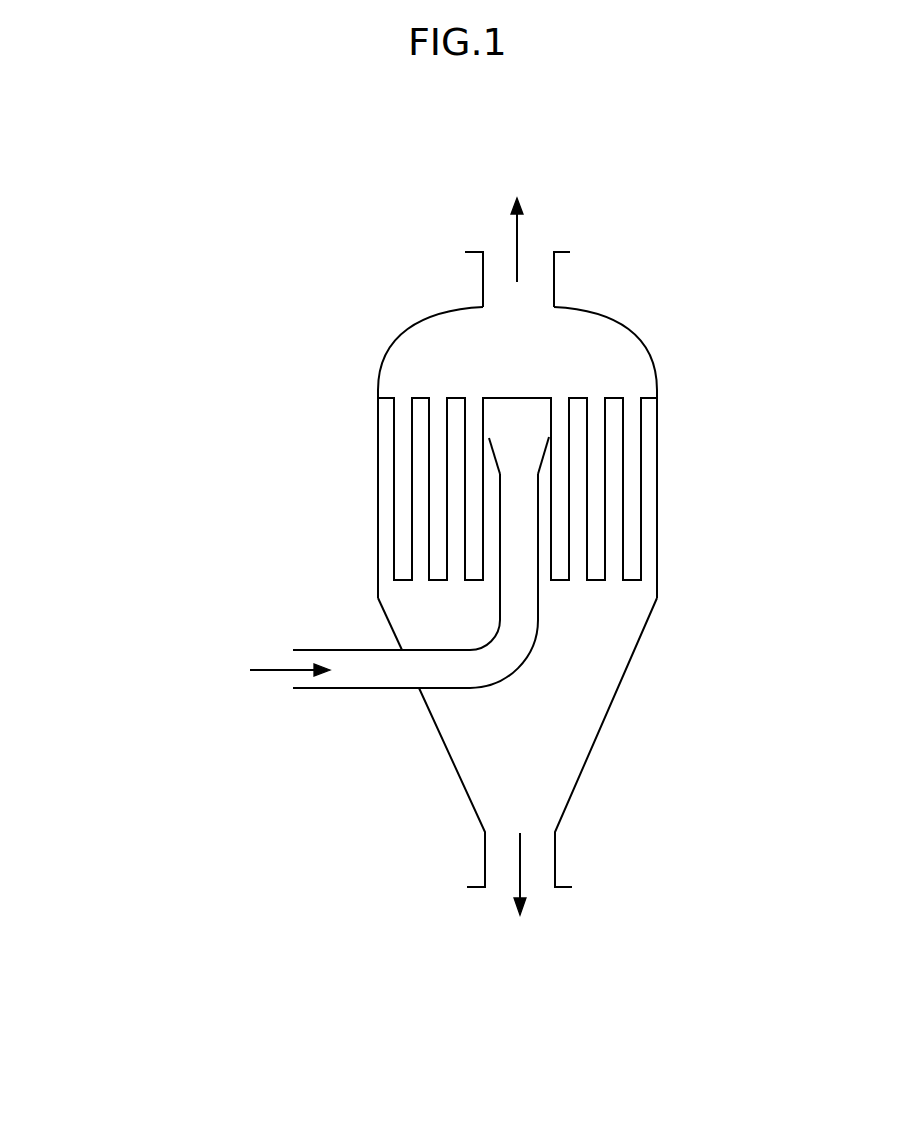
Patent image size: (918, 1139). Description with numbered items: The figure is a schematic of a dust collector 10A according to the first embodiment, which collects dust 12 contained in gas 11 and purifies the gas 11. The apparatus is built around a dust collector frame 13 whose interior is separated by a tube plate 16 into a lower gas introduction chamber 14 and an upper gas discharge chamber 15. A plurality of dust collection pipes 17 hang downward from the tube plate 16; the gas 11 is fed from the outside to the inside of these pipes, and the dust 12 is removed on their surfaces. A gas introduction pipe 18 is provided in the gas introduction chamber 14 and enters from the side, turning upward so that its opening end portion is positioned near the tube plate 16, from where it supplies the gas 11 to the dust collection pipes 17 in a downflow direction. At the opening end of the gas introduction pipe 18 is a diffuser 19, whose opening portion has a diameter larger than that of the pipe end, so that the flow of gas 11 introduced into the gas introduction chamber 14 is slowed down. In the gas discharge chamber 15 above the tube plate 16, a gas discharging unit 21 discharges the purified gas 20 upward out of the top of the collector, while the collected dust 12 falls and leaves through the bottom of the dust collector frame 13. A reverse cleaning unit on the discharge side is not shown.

The dust collector 10A is at (451, 212).
The gas 11 is at (265, 670).
The dust 12 is at (522, 887).
The dust collector frame 13 is at (657, 485).
The gas introduction chamber 14 is at (627, 640).
The gas discharge chamber 15 is at (624, 335).
The tube plate 16 is at (517, 397).
The dust collection pipes 17 is at (395, 472).
The gas introduction pipe 18 is at (530, 655).
The diffuser 19 is at (545, 458).
The purified gas 20 is at (517, 232).
The gas discharging unit 21 is at (554, 282).